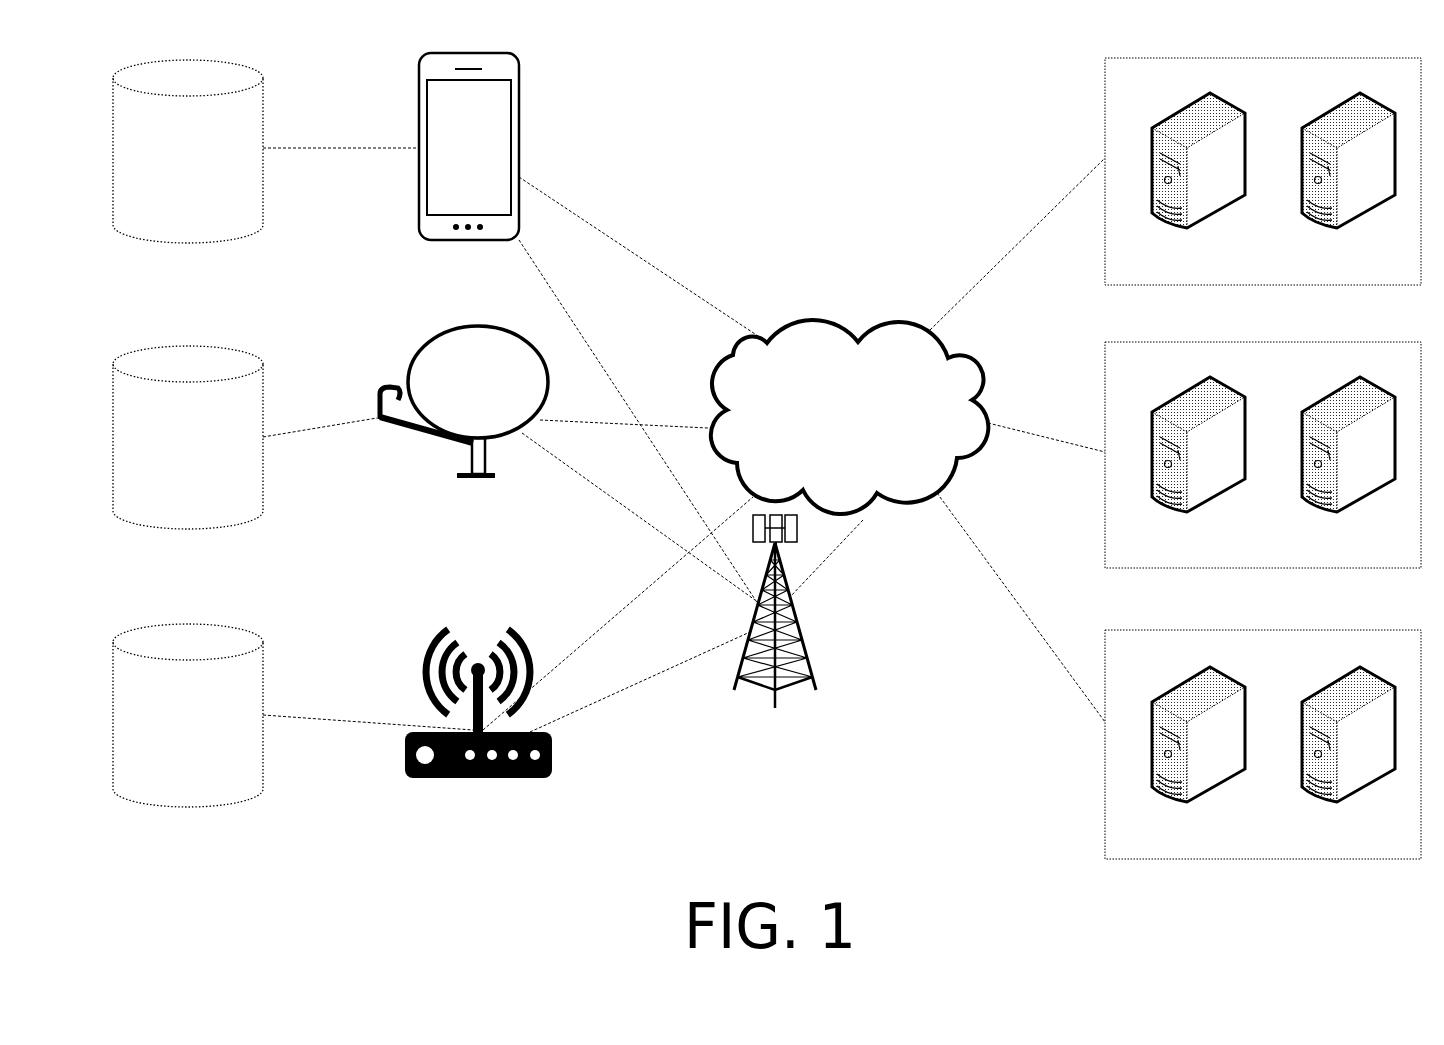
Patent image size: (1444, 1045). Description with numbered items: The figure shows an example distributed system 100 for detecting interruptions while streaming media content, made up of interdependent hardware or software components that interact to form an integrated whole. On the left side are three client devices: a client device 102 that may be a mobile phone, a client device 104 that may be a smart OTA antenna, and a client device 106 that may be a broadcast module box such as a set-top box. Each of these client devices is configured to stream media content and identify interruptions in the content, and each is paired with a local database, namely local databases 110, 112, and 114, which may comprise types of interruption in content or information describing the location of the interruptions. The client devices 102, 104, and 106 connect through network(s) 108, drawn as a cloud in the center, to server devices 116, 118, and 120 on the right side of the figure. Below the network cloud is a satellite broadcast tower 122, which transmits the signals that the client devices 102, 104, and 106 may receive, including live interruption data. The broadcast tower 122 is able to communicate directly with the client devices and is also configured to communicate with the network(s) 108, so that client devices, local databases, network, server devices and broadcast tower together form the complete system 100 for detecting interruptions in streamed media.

The system 100 is at (780, 128).
The client device 102 is at (449, 167).
The client device 104 is at (449, 537).
The client device 106 is at (463, 827).
The network(s) 108 is at (829, 460).
The local database 110 is at (169, 162).
The local database 112 is at (169, 450).
The local database 114 is at (169, 728).
The server device 116 is at (1248, 269).
The server device 118 is at (1248, 551).
The server device 120 is at (1248, 845).
The satellite broadcast tower 122 is at (756, 759).